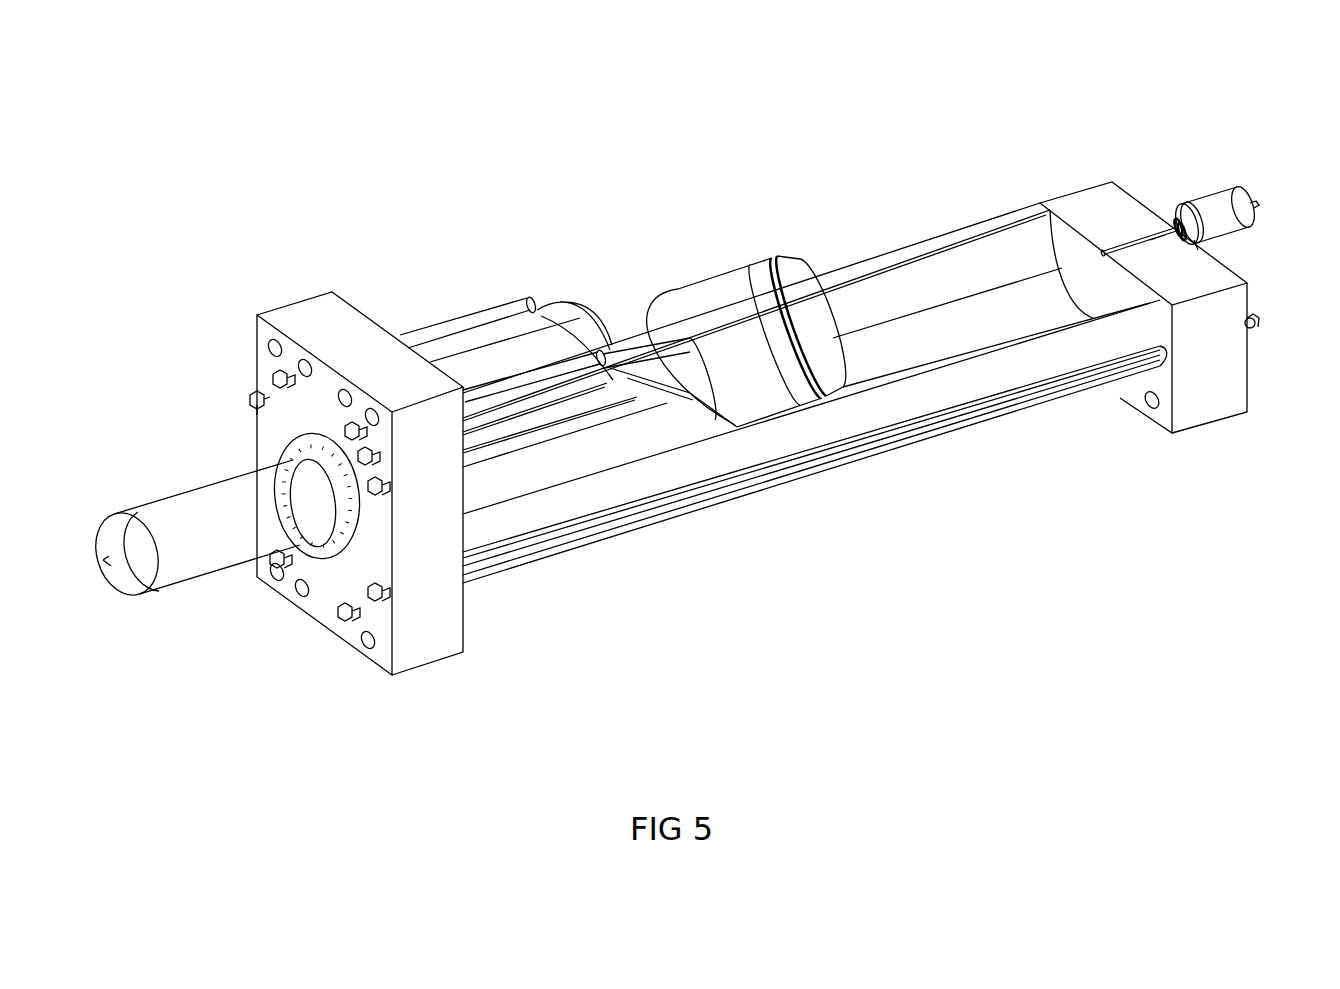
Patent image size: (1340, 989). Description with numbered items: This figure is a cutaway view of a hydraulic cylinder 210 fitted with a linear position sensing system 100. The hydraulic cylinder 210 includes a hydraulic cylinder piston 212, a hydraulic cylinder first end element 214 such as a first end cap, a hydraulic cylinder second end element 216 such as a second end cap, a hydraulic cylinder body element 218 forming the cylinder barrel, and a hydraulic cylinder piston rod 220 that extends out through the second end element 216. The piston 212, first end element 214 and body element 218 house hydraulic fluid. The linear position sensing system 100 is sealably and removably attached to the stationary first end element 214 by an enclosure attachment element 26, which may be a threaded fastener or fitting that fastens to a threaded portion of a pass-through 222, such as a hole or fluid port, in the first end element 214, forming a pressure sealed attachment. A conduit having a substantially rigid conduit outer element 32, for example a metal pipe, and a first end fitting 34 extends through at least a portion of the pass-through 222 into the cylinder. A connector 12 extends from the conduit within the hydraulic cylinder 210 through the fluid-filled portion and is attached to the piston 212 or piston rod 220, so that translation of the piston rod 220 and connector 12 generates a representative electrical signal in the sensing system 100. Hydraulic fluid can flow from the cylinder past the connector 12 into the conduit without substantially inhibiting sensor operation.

The connector 12 is at (957, 298).
The enclosure attachment element 26 is at (1196, 243).
The conduit outer element 32 is at (1158, 237).
The first end fitting 34 is at (1176, 232).
The linear position sensing system 100 is at (1211, 200).
The hydraulic cylinder 210 is at (842, 265).
The hydraulic cylinder piston 212 is at (708, 273).
The hydraulic cylinder first end element 214 is at (1070, 193).
The hydraulic cylinder second end element 216 is at (298, 307).
The hydraulic cylinder body element 218 is at (788, 483).
The hydraulic cylinder piston rod 220 is at (640, 360).
The pass-through 222 is at (1103, 248).